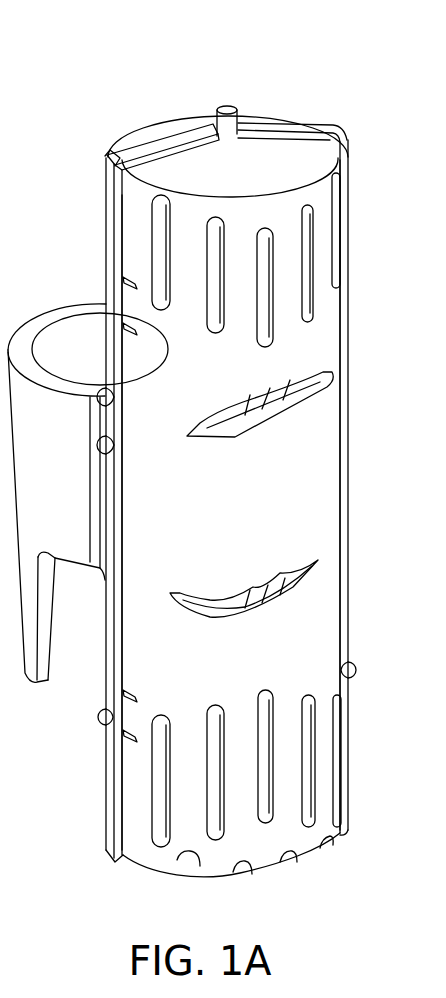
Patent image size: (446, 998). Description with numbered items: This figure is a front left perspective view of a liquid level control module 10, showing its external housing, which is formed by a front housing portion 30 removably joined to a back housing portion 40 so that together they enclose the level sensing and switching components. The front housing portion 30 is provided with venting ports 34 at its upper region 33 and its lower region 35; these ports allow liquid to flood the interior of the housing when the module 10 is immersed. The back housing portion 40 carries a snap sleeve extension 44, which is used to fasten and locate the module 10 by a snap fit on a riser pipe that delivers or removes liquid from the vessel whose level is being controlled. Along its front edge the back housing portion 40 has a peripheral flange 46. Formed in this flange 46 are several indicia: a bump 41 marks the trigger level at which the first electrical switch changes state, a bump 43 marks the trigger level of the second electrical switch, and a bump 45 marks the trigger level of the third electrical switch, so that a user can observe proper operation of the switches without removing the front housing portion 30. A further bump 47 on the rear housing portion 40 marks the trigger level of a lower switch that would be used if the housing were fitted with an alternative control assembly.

The liquid level control module 10 is at (228, 86).
The front housing portion 30 is at (322, 335).
The upper region 33 is at (318, 194).
The venting ports 34 is at (216, 222).
The lower region 35 is at (320, 802).
The back housing portion 40 is at (148, 128).
The bump 41 is at (100, 718).
The bump 43 is at (116, 449).
The snap sleeve extension 44 is at (52, 322).
The bump 45 is at (116, 400).
The peripheral flange 46 is at (183, 130).
The bump 47 is at (357, 670).